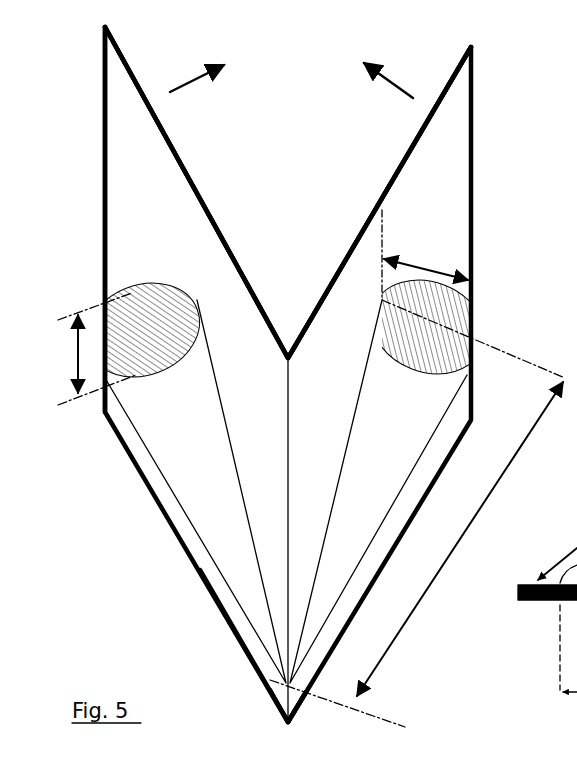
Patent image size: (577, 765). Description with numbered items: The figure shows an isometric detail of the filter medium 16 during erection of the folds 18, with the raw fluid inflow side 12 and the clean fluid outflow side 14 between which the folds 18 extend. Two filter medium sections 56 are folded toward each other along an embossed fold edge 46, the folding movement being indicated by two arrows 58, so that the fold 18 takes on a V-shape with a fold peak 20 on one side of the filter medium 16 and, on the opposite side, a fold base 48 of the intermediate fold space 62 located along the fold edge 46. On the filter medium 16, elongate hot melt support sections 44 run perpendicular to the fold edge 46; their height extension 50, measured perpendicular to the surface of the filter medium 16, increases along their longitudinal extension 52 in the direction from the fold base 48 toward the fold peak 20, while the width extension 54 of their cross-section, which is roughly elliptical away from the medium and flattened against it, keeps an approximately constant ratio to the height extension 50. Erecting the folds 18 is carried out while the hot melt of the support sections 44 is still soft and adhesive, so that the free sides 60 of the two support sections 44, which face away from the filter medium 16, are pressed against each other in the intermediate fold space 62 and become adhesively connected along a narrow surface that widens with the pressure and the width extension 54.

The inflow side 12 is at (305, 108).
The outflow side 14 is at (152, 597).
The filter medium 16 is at (120, 100).
The folds 18 is at (275, 690).
The fold peak 20 is at (283, 724).
The support sections 44 is at (190, 468).
The fold edges 46 is at (305, 698).
The fold base 48 is at (295, 540).
The height extension 50 is at (425, 252).
The longitudinal extension 52 is at (515, 455).
The width extension 54 is at (78, 307).
The filter medium sections 56 is at (140, 236).
The arrows 58 is at (200, 84).
The free sides 60 is at (208, 364).
The intermediate fold space 62 is at (292, 262).